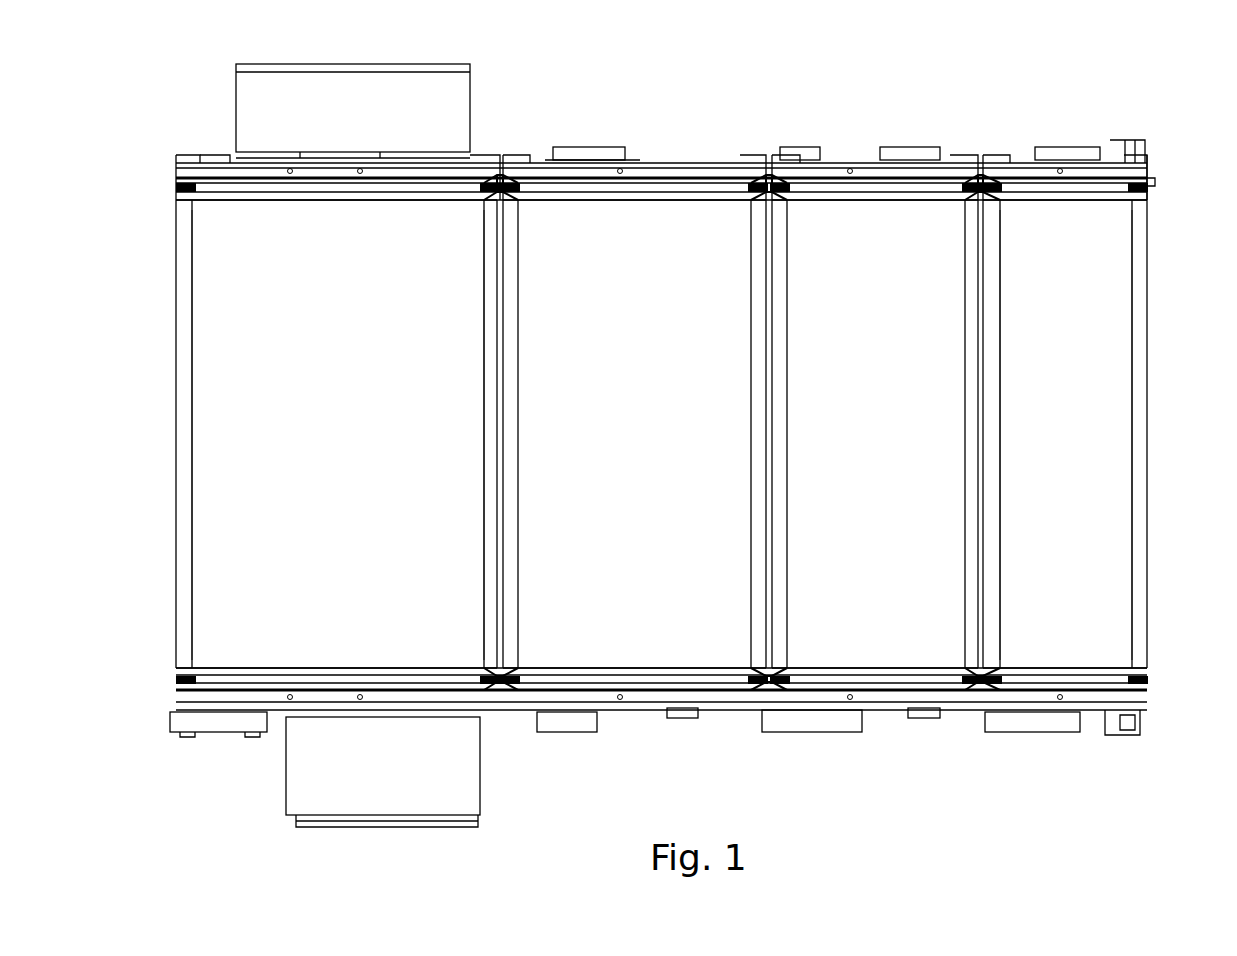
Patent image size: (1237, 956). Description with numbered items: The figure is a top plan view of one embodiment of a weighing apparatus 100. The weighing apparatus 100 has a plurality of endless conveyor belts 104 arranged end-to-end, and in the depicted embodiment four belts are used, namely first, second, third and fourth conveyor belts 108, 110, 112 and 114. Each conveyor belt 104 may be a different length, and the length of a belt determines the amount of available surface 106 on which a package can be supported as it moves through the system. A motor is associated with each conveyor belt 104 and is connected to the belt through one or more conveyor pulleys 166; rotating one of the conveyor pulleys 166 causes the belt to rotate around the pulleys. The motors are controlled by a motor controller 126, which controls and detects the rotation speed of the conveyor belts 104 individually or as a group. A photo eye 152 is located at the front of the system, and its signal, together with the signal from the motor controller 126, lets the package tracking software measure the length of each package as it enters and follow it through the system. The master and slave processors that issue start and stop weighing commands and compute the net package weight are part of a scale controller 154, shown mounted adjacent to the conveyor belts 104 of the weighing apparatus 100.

The weighing apparatus 100 is at (818, 78).
The endless conveyor belts 104 is at (1088, 617).
The surface 106 is at (418, 435).
The first conveyor belt 108 is at (1052, 240).
The second conveyor belt 110 is at (868, 230).
The third conveyor belt 112 is at (632, 233).
The fourth conveyor belt 114 is at (432, 243).
The motor controller 126 is at (383, 772).
The photo eye 152 is at (1122, 725).
The scale controller 154 is at (353, 111).
The conveyor pulleys 166 is at (1125, 700).